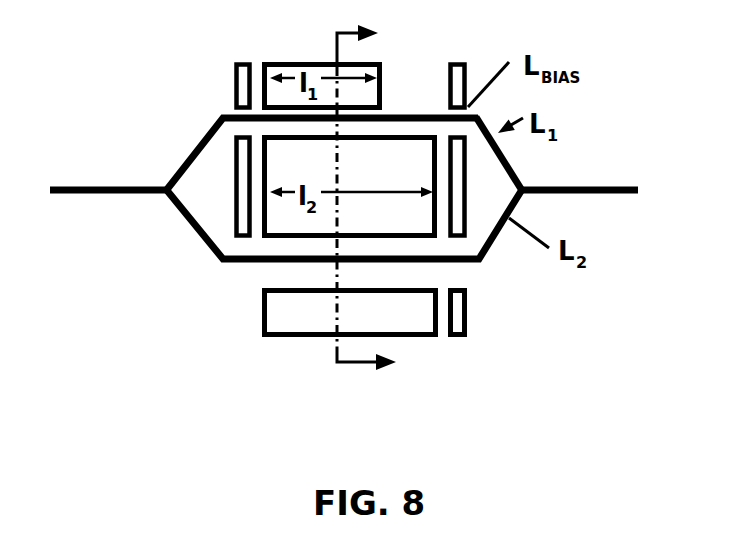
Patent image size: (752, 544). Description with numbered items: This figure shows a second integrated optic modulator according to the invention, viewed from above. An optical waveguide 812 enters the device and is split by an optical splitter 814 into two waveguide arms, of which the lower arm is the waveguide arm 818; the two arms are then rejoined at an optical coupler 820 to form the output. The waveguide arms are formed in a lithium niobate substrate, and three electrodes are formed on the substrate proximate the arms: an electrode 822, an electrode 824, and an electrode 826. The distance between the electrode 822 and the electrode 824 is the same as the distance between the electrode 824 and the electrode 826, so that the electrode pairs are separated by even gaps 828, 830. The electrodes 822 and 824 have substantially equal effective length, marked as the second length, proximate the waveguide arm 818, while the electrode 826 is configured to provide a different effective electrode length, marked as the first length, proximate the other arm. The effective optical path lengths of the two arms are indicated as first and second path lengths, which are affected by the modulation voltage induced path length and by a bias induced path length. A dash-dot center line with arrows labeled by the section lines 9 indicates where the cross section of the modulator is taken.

The optical waveguide 812 is at (108, 185).
The optical splitter 814 is at (163, 187).
The waveguide arm 818 is at (188, 225).
The optical coupler 820 is at (528, 182).
The electrode 822 is at (423, 303).
The electrode 824 is at (409, 205).
The electrode 826 is at (288, 62).
The gap 828 is at (246, 282).
The gap 830 is at (400, 101).
The section lines 9— 9 is at (381, 204).